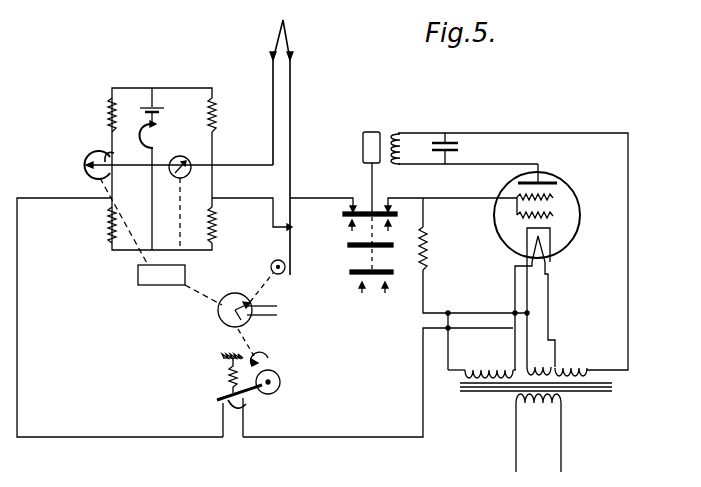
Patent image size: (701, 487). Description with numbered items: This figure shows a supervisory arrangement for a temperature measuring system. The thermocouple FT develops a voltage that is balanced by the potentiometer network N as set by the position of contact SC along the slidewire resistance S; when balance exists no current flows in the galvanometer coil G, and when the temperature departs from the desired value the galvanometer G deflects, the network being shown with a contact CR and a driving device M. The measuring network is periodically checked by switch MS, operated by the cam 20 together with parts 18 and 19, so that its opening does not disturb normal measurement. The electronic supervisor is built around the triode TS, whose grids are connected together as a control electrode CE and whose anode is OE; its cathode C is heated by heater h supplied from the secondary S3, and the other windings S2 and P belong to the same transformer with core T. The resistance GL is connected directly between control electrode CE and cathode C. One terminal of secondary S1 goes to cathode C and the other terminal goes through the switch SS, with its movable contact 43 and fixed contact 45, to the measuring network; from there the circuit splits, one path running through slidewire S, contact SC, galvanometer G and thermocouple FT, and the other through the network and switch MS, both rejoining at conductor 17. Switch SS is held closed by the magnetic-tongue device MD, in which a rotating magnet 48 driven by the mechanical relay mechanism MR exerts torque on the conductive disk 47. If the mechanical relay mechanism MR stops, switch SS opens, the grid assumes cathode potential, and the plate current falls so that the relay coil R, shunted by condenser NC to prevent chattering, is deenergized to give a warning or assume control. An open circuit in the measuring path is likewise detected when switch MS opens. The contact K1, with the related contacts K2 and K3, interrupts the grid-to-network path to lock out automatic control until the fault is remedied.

The slidewire resistance S is at (96, 150).
The contact SC is at (120, 156).
The contact relay CR is at (138, 132).
The potentiometer network N is at (193, 125).
The galvanometer coil G is at (181, 194).
The mechanical relay mechanism MR is at (161, 241).
The motor M is at (237, 324).
The roller 18 is at (288, 266).
The conductor 19 is at (272, 222).
The cam 20 is at (272, 262).
The switch MS is at (296, 240).
The thermocouple FT is at (292, 40).
The magnet 48 is at (265, 358).
The magnetic-tongue device MD is at (322, 371).
The disk 47 is at (279, 388).
The switch SS is at (229, 395).
The movable contact 43 is at (247, 406).
The contact 45 is at (220, 408).
The relay coil R is at (400, 135).
The condenser NC is at (448, 141).
The contact K1 is at (380, 216).
The condenser plate K2 is at (391, 248).
The condenser plate K3 is at (392, 276).
The conductor 17 is at (447, 197).
The resistance GL is at (426, 252).
The triode TS is at (580, 200).
The anode OE is at (546, 182).
The control electrode CE is at (517, 207).
The cathode C is at (552, 241).
The heater h is at (552, 268).
The secondary S1 is at (478, 370).
The transformer winding S2 is at (584, 360).
The secondary S3 is at (535, 368).
The thermocouple T is at (478, 394).
The primary winding P is at (540, 408).